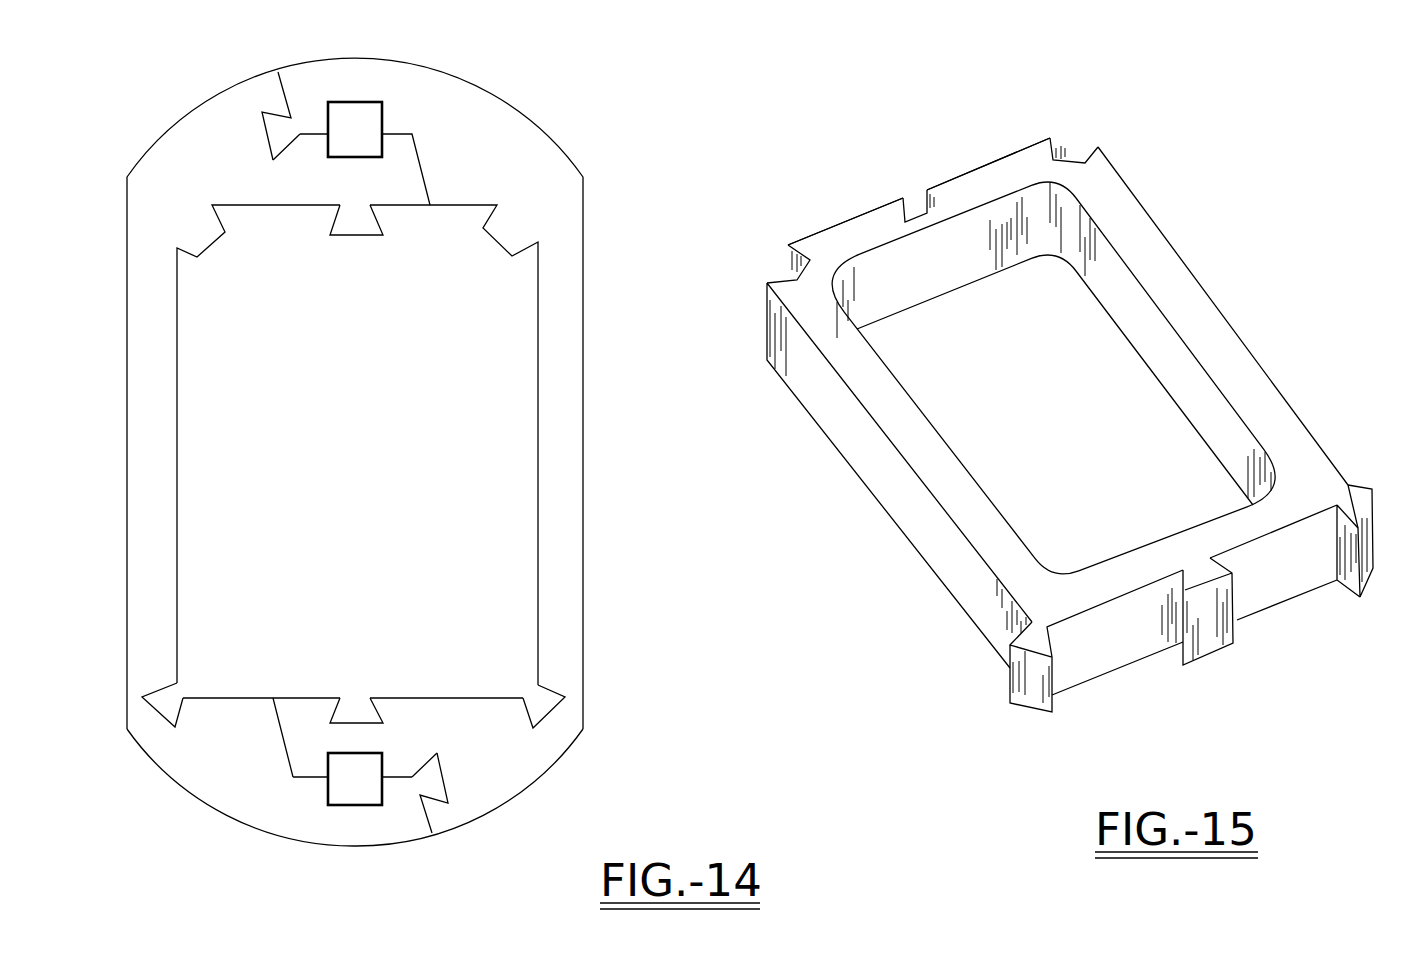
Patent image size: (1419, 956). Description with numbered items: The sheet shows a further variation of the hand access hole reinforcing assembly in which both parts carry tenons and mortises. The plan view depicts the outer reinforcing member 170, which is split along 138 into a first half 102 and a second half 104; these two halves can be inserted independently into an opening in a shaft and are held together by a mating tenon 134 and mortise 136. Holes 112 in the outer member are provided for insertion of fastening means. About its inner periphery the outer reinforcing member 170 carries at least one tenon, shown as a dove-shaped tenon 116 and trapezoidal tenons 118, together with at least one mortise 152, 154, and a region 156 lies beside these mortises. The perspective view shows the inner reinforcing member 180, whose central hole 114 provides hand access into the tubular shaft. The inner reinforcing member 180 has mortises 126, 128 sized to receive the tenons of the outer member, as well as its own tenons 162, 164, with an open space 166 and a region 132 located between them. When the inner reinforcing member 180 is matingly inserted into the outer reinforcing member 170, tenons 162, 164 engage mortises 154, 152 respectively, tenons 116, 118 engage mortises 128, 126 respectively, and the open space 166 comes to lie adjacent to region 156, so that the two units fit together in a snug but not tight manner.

In FIG. 14, the outer reinforcing member 170 is at (513, 102).
In FIG. 14, the first half 102 is at (530, 765).
In FIG. 14, the second half 104 is at (255, 803).
In FIG. 14, the holes 112 is at (357, 118).
In FIG. 14, the tenon 116 is at (364, 230).
In FIG. 14, the tenons 118 is at (210, 237).
In FIG. 14, the tenon 134 is at (273, 147).
In FIG. 14, the mortise 136 is at (278, 123).
In FIG. 14, the split 138 is at (420, 163).
In FIG. 14, the mortise 152 is at (162, 712).
In FIG. 14, the mortise 154 is at (348, 722).
In FIG. 14, the region 156 is at (283, 698).
In FIG. 15, the inner reinforcing member 180 is at (1180, 213).
In FIG. 15, the hole 114 is at (960, 378).
In FIG. 15, the mortise 126 is at (792, 272).
In FIG. 15, the mortise 128 is at (920, 207).
In FIG. 15, the region 132 is at (833, 227).
In FIG. 15, the tenon 162 is at (1218, 647).
In FIG. 15, the tenon 164 is at (1365, 582).
In FIG. 15, the open space 166 is at (1272, 597).